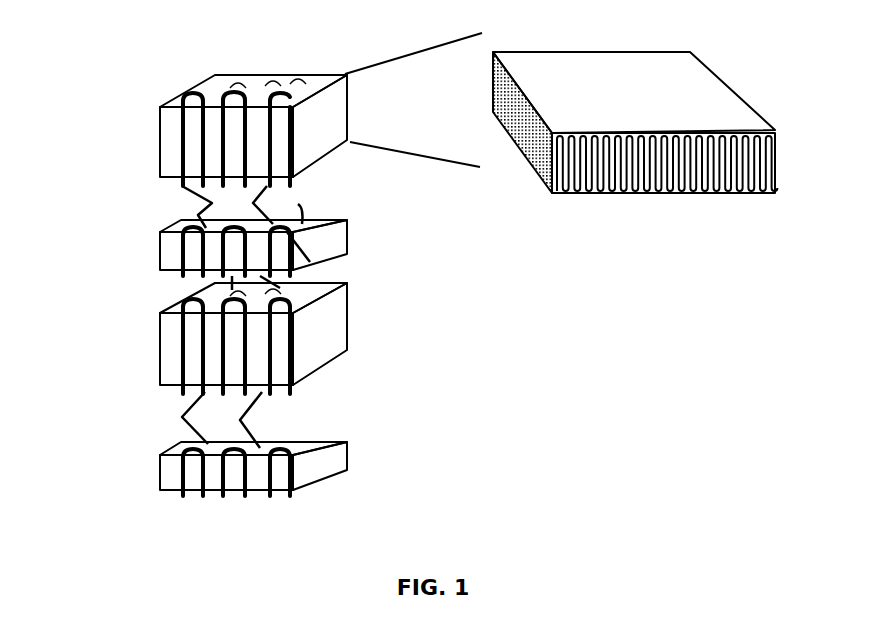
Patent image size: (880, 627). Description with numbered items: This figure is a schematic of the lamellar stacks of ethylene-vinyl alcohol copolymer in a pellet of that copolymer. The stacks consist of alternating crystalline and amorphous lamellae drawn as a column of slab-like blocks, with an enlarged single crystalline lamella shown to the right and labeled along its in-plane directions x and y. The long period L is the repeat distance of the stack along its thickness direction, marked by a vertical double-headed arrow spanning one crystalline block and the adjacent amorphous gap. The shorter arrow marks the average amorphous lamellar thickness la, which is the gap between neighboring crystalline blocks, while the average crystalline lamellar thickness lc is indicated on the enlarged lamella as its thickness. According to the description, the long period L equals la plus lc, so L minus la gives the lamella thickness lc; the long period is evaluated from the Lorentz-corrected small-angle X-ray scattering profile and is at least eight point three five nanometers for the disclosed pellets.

The long period L is at (128, 231).
The average amorphous lamellar thickness la is at (52, 231).
The average crystalline lamellar thickness lc is at (812, 177).
The x axis direction x is at (675, 205).
The y axis direction y is at (491, 152).